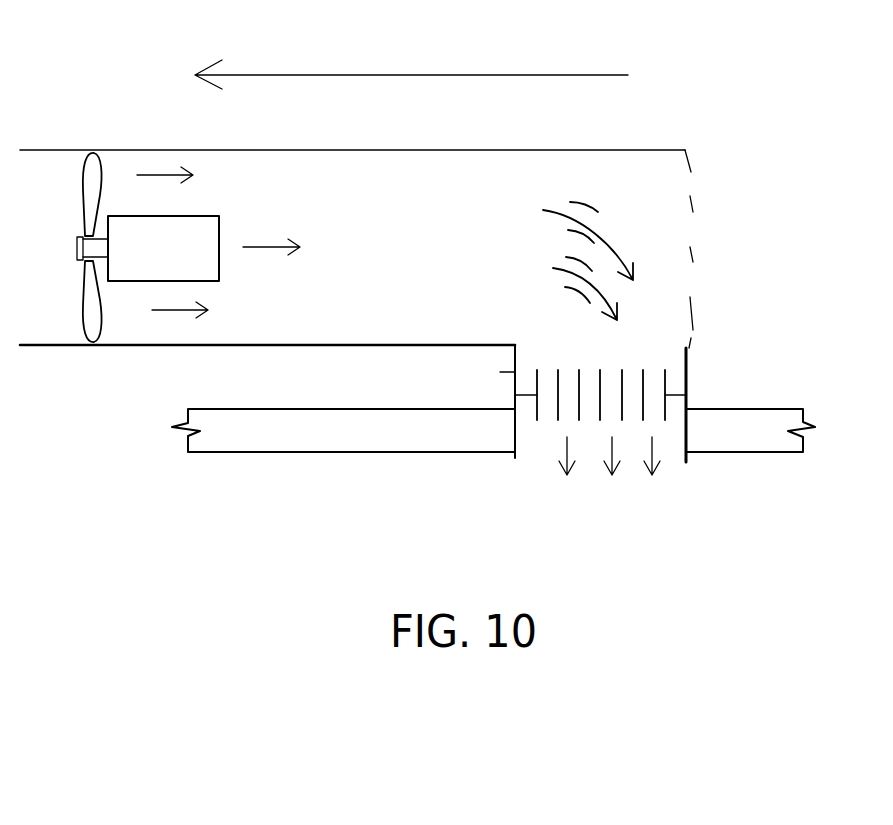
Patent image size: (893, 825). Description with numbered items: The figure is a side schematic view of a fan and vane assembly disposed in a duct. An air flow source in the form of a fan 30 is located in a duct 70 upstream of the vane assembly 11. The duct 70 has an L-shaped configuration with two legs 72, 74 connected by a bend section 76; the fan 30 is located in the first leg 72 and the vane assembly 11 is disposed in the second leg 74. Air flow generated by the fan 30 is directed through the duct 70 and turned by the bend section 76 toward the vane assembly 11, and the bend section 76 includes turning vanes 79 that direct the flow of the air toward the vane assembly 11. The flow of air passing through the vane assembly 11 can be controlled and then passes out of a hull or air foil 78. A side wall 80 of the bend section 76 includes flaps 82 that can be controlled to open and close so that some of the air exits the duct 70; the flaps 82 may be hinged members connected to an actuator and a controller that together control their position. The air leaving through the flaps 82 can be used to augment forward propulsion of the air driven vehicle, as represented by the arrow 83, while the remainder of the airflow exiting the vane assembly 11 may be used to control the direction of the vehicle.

The vane assembly 11 is at (675, 381).
The fan 30 is at (148, 228).
The duct 70 is at (325, 150).
The leg 72 is at (77, 150).
The leg 74 is at (500, 372).
The bend section 76 is at (626, 192).
The hull or air foil 78 is at (750, 455).
The turning vanes 79 is at (584, 204).
The side wall 80 is at (692, 168).
The flaps 82 is at (692, 290).
The arrow 83 is at (583, 75).